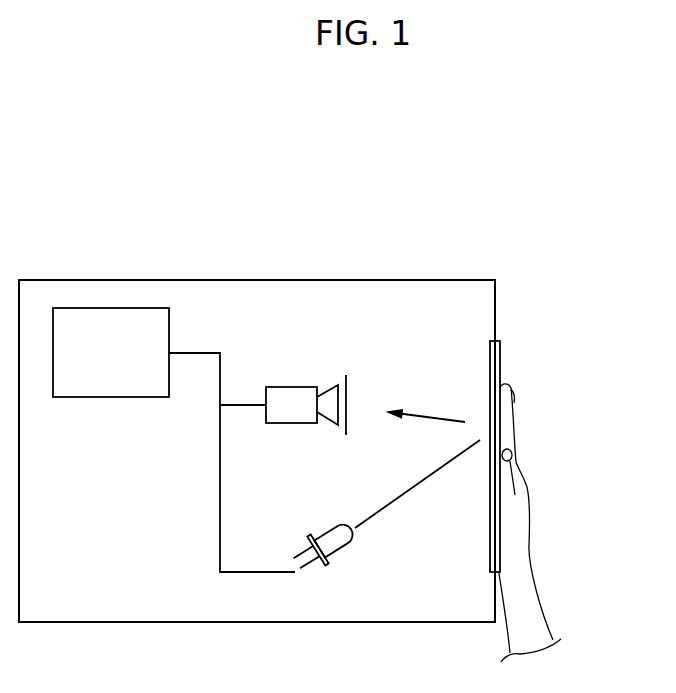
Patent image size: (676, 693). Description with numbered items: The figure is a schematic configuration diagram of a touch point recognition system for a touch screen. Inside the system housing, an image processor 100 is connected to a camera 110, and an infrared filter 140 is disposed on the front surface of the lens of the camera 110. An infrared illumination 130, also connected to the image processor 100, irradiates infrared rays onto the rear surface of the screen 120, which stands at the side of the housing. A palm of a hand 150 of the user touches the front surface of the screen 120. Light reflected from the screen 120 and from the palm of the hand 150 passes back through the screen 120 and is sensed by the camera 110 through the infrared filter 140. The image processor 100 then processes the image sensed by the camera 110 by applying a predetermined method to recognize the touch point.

The image processor 100 is at (170, 330).
The camera 110 is at (289, 386).
The screen 120 is at (501, 356).
The infrared illumination 130 is at (357, 535).
The infrared filter 140 is at (347, 382).
The palm of a hand 150 is at (527, 503).